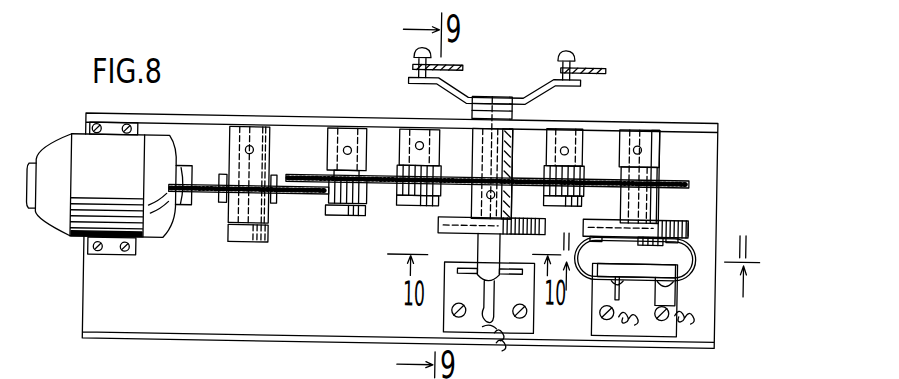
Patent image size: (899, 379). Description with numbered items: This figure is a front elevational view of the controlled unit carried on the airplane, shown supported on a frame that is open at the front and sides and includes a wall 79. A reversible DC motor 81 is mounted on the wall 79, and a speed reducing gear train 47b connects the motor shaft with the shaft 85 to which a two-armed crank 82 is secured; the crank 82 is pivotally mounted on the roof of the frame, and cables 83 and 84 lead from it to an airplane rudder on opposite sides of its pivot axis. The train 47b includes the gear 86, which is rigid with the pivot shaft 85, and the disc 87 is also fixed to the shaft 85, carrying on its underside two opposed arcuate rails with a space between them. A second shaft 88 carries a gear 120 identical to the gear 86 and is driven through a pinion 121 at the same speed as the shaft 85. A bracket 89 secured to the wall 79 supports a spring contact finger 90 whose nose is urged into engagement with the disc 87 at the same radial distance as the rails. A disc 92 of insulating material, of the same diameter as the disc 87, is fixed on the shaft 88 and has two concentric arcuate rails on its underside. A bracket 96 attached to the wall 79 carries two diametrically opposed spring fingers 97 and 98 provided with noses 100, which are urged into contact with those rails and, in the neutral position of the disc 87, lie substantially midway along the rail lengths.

The wall 79 is at (244, 303).
The reversible DC motor 81 is at (118, 239).
The speed reducing gear train 47b is at (291, 219).
The two-armed crank 82 is at (523, 78).
The cable 83 is at (460, 61).
The cable 84 is at (610, 61).
The shaft 85 is at (503, 106).
The gear 86 is at (462, 170).
The disc 87 is at (440, 220).
The shaft 88 is at (660, 191).
The bracket 89 is at (471, 322).
The spring contact finger 90 is at (480, 236).
The disc of insulating material 92 is at (690, 218).
The bracket 96 is at (616, 318).
The spring finger 97 is at (588, 272).
The spring finger 98 is at (690, 268).
The noses 100 is at (690, 230).
The gear 120 is at (673, 171).
The pinion 121 is at (547, 164).